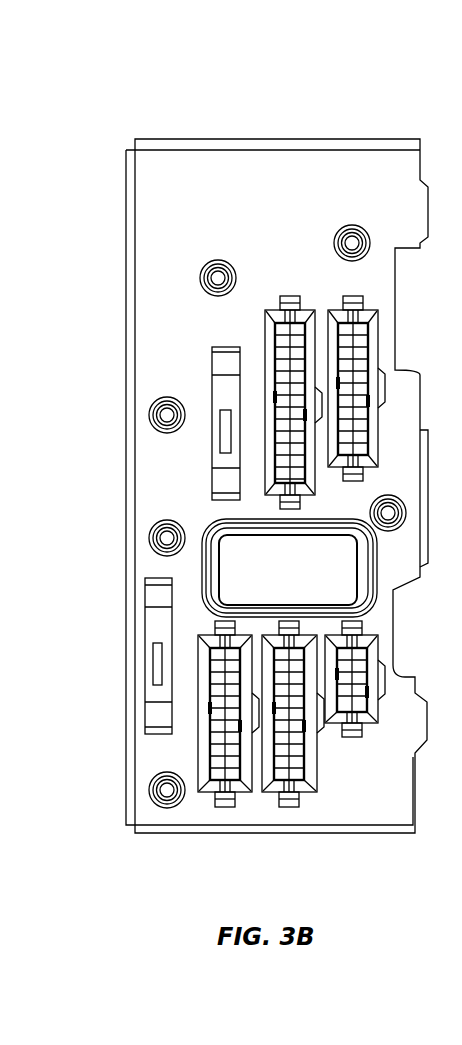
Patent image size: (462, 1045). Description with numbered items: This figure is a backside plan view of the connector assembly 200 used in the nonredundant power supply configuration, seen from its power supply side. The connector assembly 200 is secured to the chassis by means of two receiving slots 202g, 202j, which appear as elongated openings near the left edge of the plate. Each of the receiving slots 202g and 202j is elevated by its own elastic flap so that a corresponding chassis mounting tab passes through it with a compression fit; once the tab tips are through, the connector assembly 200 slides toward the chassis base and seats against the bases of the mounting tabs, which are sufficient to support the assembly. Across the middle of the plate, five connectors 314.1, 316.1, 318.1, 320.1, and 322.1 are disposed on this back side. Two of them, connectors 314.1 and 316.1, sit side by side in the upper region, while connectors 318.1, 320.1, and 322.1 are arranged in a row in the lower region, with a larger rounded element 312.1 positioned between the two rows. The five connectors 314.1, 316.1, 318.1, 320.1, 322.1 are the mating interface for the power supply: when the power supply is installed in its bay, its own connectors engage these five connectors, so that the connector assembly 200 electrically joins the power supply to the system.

The connector assembly 200 is at (371, 112).
The receiving slot 202g is at (221, 422).
The receiving slot 202j is at (157, 668).
The connector 312.1 is at (245, 563).
The connector 314.1 is at (277, 310).
The connector 316.1 is at (367, 310).
The connector 318.1 is at (205, 793).
The connector 320.1 is at (268, 793).
The connector 322.1 is at (336, 722).